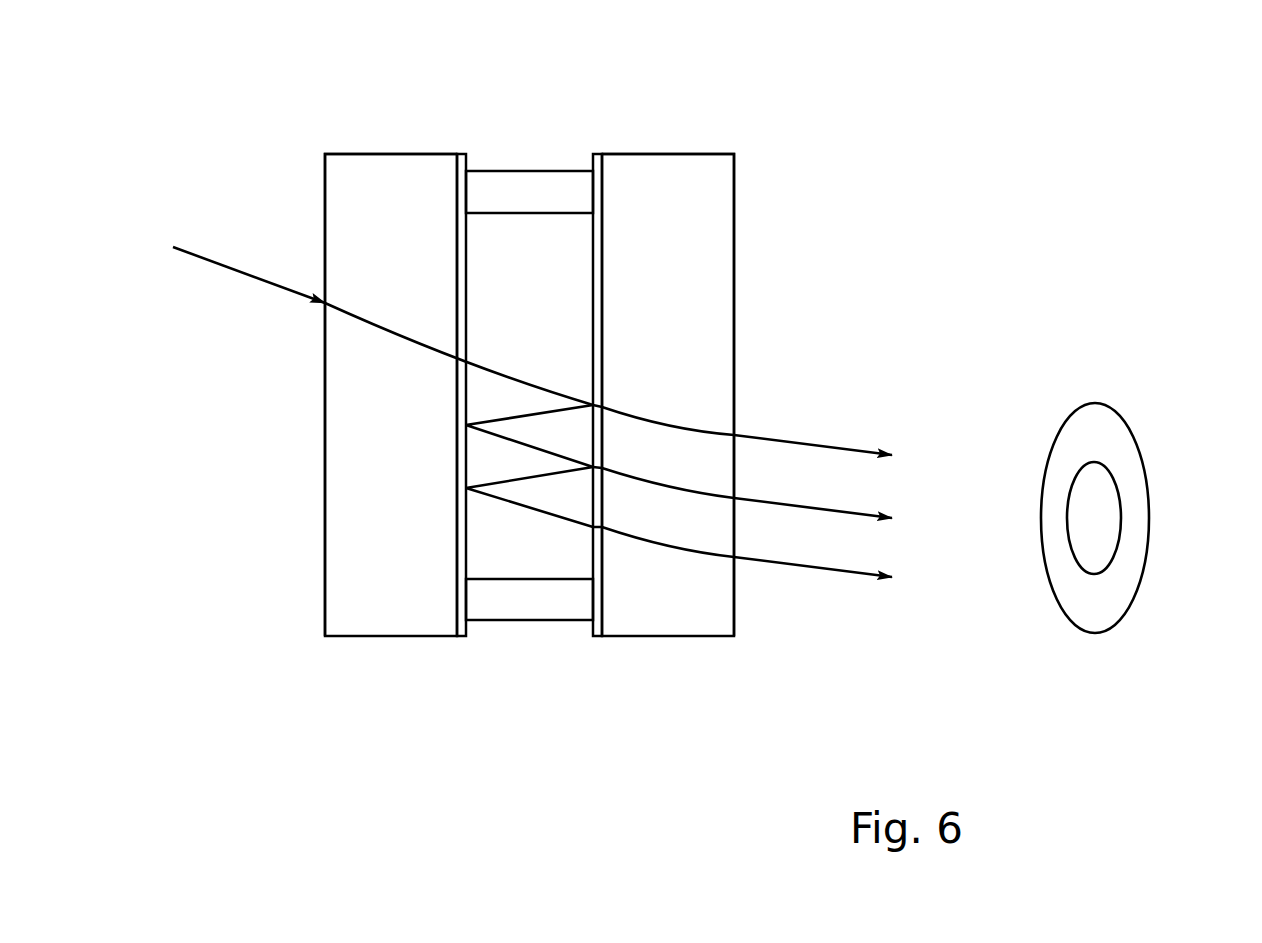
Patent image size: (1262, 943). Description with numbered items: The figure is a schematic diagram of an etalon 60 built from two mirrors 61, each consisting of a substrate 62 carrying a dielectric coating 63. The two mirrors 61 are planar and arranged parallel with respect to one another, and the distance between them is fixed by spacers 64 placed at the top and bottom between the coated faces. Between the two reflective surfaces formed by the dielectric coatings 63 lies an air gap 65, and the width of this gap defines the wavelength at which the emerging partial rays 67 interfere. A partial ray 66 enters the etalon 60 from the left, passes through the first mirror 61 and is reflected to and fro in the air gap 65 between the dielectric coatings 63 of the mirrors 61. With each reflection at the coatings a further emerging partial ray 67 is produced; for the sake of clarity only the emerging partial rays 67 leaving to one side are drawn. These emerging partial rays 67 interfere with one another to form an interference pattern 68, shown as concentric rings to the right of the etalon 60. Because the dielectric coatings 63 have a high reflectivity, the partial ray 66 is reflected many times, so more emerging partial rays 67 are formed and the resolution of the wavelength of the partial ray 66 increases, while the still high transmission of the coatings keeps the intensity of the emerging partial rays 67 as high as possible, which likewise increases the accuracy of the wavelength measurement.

The etalon 60 is at (812, 116).
The mirror 61 is at (403, 660).
The substrate 62 is at (325, 200).
The dielectric coating 63 is at (460, 154).
The spacer 64 is at (532, 171).
The air gap 65 is at (527, 547).
The partial ray 66 is at (248, 275).
The emerging partial rays 67 is at (840, 418).
The interference pattern 68 is at (1160, 405).